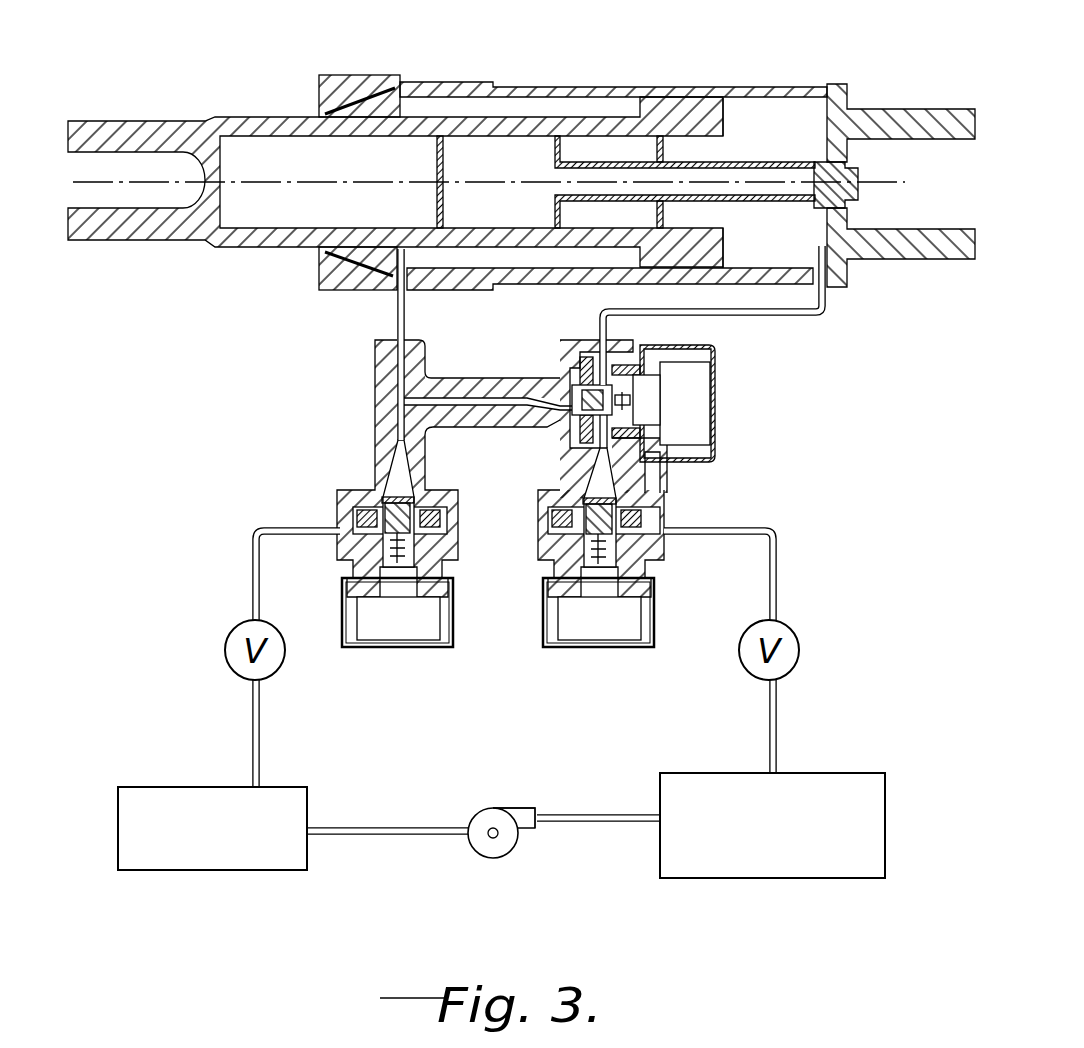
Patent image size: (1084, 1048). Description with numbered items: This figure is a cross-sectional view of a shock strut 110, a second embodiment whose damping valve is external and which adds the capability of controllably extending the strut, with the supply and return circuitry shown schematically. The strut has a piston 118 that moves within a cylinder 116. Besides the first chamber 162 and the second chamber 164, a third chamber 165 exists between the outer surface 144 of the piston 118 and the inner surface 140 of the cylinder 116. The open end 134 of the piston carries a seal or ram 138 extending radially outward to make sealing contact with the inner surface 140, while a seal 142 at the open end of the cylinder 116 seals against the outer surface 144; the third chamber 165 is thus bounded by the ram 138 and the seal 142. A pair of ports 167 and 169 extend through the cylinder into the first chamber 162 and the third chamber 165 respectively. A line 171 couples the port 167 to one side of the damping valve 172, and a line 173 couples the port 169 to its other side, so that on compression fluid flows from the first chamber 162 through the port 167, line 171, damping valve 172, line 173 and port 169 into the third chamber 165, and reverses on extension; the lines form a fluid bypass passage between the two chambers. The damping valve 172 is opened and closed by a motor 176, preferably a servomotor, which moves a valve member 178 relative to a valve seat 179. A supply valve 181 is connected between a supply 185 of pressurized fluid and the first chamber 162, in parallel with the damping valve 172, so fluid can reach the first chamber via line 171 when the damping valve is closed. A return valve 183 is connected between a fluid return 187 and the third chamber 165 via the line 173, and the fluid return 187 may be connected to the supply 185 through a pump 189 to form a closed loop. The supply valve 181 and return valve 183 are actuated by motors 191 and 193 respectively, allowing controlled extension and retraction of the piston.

The strut 110 is at (670, 57).
The cylinder 116 is at (830, 86).
The piston 118 is at (222, 128).
The open end 134 is at (852, 166).
The seal or ram 138 is at (812, 169).
The inner surface 140 is at (437, 100).
The seal 142 is at (337, 262).
The outer surface 144 is at (512, 118).
The first chamber 162 is at (800, 150).
The second chamber 164 is at (532, 175).
The third chamber 165 is at (527, 253).
The port 167 is at (828, 242).
The port 169 is at (440, 225).
The line 171 is at (786, 314).
The damping valve 172 is at (488, 430).
The line 173 is at (408, 306).
The motor 176 is at (700, 411).
The valve member 178 is at (566, 392).
The valve seat 179 is at (560, 411).
The supply valve 181 is at (676, 507).
The return valve 183 is at (327, 492).
The supply 185 is at (760, 878).
The fluid return 187 is at (278, 787).
The pump 189 is at (480, 858).
The motor 191 is at (595, 628).
The motor 193 is at (405, 628).